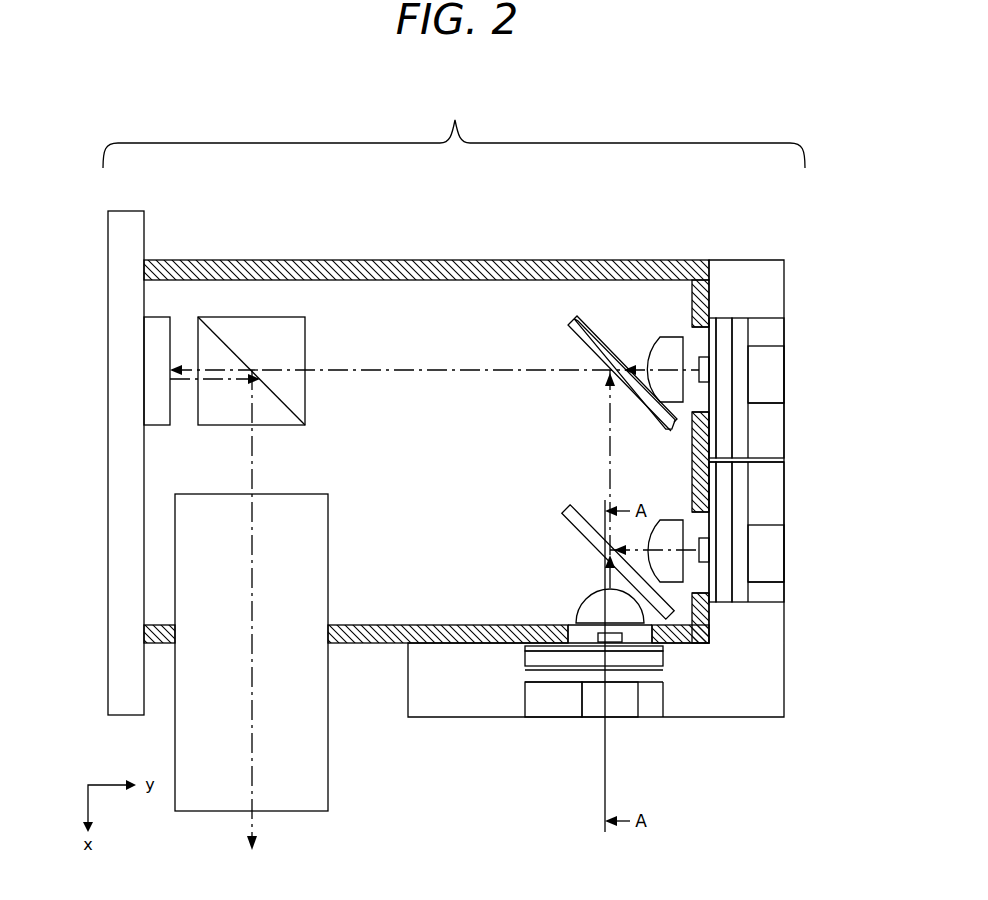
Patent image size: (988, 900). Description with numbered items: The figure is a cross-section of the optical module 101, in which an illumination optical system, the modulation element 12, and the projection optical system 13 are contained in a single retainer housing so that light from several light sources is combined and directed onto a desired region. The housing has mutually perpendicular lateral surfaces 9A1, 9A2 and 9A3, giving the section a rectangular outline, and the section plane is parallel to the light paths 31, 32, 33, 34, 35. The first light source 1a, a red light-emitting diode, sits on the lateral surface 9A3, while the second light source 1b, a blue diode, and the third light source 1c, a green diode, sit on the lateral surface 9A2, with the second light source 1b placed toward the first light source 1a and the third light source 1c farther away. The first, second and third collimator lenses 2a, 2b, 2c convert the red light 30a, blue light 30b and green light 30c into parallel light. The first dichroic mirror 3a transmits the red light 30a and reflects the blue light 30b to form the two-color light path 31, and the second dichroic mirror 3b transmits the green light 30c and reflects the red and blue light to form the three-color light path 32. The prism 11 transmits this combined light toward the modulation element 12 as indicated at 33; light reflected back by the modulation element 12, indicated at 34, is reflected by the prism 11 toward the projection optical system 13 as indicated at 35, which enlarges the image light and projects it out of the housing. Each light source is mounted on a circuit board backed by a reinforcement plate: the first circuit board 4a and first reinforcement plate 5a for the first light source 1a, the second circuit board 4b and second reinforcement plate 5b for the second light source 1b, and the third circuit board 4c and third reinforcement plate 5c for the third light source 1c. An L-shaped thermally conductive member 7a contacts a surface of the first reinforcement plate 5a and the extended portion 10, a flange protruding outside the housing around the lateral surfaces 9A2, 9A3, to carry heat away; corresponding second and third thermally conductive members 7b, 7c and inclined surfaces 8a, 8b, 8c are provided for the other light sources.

The optical module 101 is at (454, 129).
The modulation element 12 is at (155, 333).
The prism 11 is at (256, 332).
The projection optical system 13 is at (207, 795).
The lateral surface 9A1 is at (430, 262).
The lateral surface 9A2 is at (711, 281).
The lateral surface 9A3 is at (446, 646).
The extended portion 10 is at (762, 706).
The first light source 1a is at (616, 638).
The second light source 1b is at (707, 545).
The third light source 1c is at (708, 360).
The first collimator lens 2a is at (630, 617).
The second collimator lens 2b is at (678, 572).
The third collimator lens 2c is at (678, 352).
The first dichroic mirror 3a is at (667, 615).
The second dichroic mirror 3b is at (597, 335).
The first circuit board 4a is at (538, 647).
The second circuit board 4b is at (713, 588).
The third circuit board 4c is at (713, 435).
The first reinforcement plate 5a is at (553, 660).
The second reinforcement plate 5b is at (723, 578).
The third reinforcement plate 5c is at (725, 415).
The thermally conductive member 7a is at (558, 708).
The second thermally conductive member 7b is at (773, 592).
The third thermally conductive member 7c is at (773, 417).
The first insulating portion 8a is at (597, 708).
The second inclined surface 8b is at (773, 553).
The third inclined surface 8c is at (773, 377).
The red light 30a is at (603, 587).
The blue light 30b is at (661, 548).
The green light 30c is at (661, 365).
The two-color light path 31 is at (608, 442).
The three-color light path 32 is at (454, 372).
The transmitted light path 33 is at (204, 368).
The returning light path 34 is at (213, 382).
The reflected light path 35 is at (256, 460).